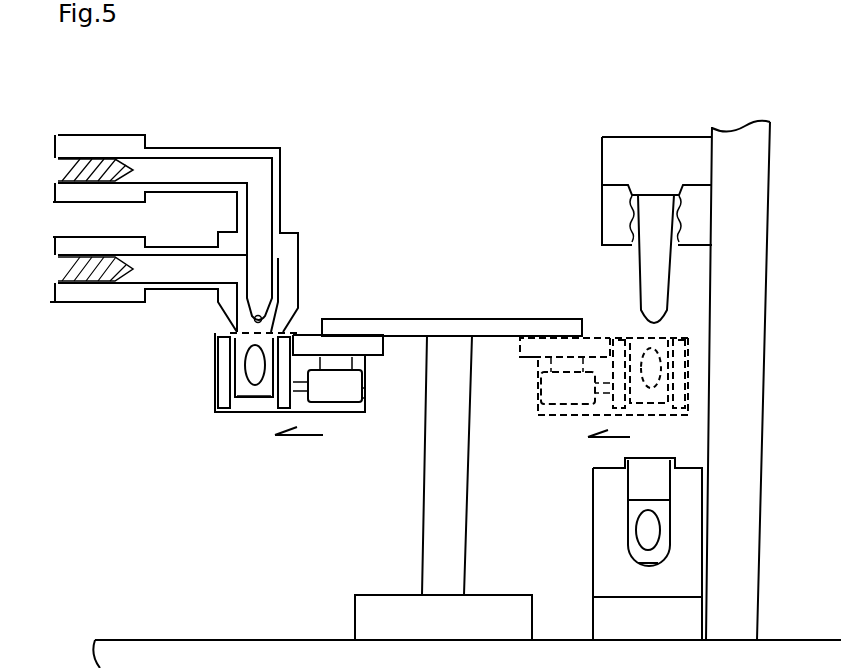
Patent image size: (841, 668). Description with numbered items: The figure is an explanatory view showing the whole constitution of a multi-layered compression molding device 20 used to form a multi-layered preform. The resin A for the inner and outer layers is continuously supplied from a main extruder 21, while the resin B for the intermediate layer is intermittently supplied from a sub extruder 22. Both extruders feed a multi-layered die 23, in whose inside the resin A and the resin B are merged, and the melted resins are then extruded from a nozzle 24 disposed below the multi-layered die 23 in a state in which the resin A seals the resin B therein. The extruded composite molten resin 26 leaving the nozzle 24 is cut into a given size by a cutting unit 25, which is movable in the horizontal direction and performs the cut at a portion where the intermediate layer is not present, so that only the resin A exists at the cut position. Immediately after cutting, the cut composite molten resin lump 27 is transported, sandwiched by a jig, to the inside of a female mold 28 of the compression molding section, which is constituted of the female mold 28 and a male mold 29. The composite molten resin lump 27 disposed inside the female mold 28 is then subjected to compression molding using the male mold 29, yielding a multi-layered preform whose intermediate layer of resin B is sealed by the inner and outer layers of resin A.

The multi-layered compression molding device 20 is at (463, 267).
The main extruder 21 is at (98, 293).
The sub extruder 22 is at (102, 137).
The multi-layered die 23 is at (288, 270).
The nozzle 24 is at (223, 313).
The cutting unit 25 is at (262, 380).
The extruded composite molten resin 26 is at (247, 385).
The cut composite molten resin lump 27 is at (635, 510).
The female mold 28 is at (602, 549).
The male mold 29 is at (650, 268).
The resin A is at (242, 392).
The resin B is at (255, 367).